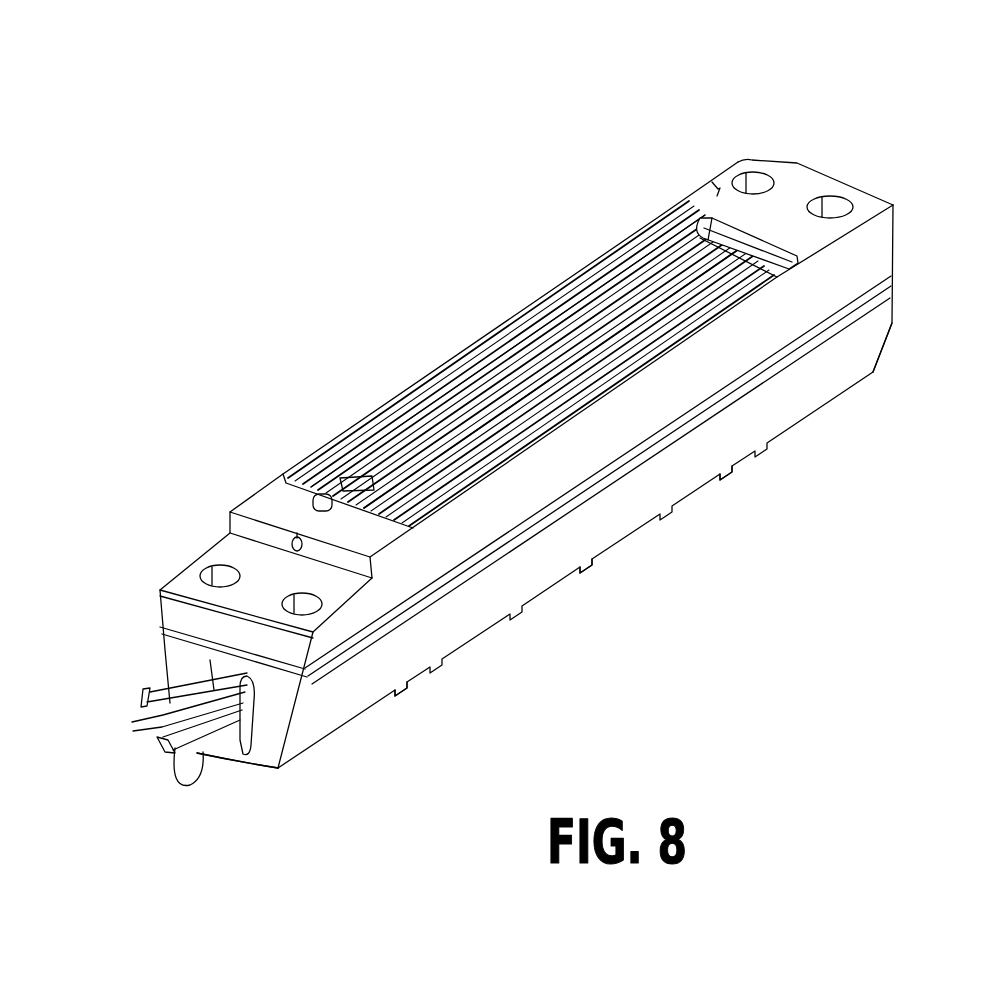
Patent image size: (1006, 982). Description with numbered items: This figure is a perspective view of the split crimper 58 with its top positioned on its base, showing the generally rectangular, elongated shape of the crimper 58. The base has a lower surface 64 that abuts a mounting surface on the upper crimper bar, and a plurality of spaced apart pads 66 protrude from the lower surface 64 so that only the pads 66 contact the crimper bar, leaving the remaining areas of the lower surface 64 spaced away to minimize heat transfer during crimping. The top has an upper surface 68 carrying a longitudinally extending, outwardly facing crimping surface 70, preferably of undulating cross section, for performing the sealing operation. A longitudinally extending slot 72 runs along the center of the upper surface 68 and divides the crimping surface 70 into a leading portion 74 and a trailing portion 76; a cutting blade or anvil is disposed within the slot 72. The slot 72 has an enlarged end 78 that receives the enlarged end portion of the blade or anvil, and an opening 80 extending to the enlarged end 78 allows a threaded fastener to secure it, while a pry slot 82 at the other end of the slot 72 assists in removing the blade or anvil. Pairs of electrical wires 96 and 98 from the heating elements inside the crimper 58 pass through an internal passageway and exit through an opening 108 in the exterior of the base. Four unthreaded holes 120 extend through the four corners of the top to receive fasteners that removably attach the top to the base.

The split crimper 58 is at (174, 285).
The lower surface 64 is at (512, 622).
The pads 66 is at (584, 582).
The upper surface 68 is at (428, 682).
The crimping surface 70 is at (480, 355).
The slot 72 is at (360, 478).
The leading portion 74 is at (575, 382).
The trailing portion 76 is at (413, 374).
The enlarged end 78 is at (265, 490).
The opening 80 is at (212, 553).
The pry slot 82 is at (762, 238).
The electrical wires 96 is at (140, 712).
The electrical wires 98 is at (196, 784).
The opening 108 is at (247, 762).
The unthreaded holes 120 is at (196, 588).